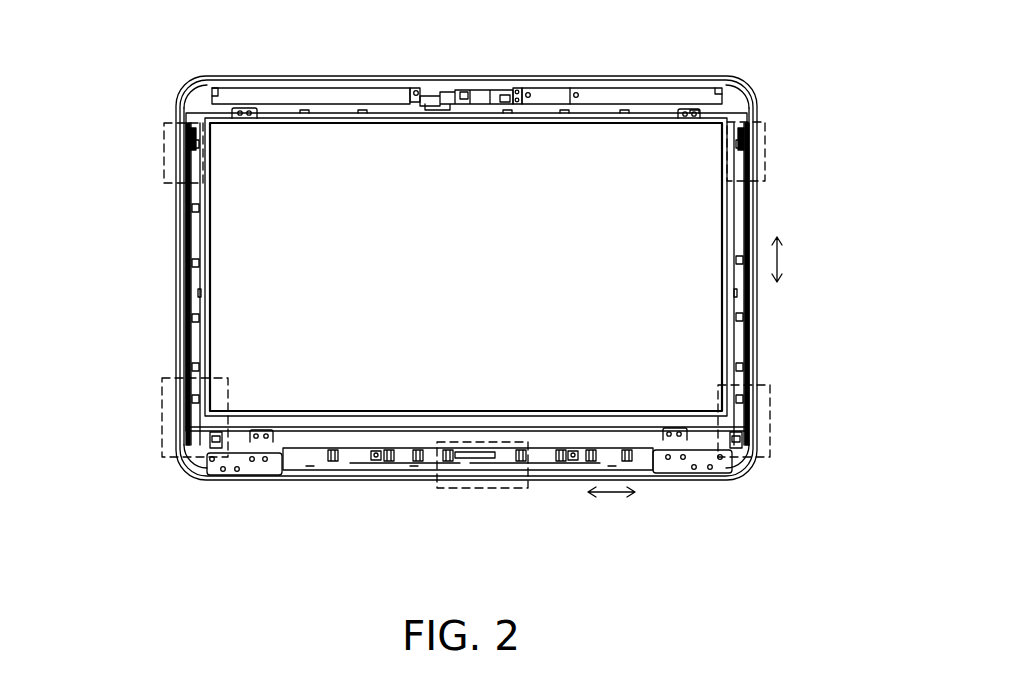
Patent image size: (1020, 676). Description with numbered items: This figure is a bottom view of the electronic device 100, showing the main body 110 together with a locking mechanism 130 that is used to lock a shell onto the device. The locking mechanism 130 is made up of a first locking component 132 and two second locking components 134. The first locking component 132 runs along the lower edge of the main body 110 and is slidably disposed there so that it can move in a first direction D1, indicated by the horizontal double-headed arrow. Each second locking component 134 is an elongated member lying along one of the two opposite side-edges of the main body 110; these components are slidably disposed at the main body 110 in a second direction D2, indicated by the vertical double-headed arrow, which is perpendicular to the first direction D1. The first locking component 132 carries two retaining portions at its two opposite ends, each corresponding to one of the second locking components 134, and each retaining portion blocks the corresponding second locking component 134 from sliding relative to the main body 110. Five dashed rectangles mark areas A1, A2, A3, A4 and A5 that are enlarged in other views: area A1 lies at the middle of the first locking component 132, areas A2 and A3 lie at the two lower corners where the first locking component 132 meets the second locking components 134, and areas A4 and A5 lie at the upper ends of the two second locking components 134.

The electronic device 100 is at (796, 48).
The main body 110 is at (733, 110).
The locking mechanism 130 is at (382, 473).
The first locking component 132 is at (355, 460).
The second locking component 134 is at (192, 340).
The area A1 is at (480, 490).
The area A2 is at (163, 415).
The area A3 is at (770, 420).
The area A4 is at (164, 147).
The area A5 is at (765, 147).
The first direction D1 is at (612, 494).
The second direction D2 is at (783, 257).